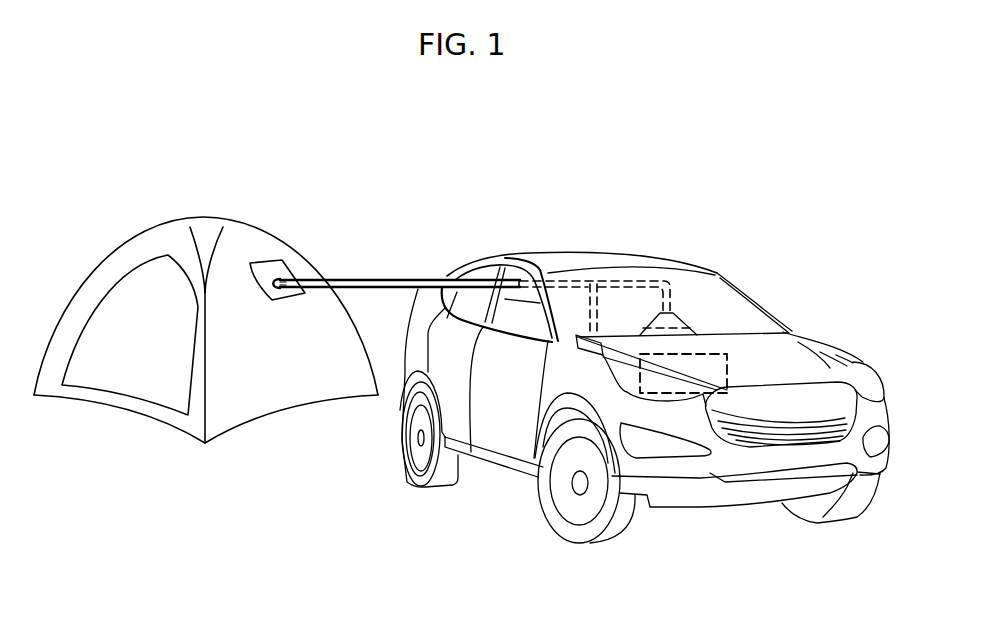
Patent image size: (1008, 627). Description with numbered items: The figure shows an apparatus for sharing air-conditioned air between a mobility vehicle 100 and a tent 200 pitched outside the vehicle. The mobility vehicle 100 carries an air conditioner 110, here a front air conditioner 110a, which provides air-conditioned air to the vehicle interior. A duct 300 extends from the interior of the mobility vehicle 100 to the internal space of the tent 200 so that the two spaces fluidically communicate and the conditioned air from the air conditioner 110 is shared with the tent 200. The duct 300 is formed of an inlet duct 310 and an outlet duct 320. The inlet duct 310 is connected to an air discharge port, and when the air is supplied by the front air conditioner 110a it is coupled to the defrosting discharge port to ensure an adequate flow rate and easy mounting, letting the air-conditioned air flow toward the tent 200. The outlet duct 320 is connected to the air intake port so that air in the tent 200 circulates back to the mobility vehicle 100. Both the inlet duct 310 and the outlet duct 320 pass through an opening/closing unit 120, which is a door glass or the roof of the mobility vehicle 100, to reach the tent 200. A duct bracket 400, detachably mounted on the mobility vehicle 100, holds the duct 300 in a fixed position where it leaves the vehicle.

The mobility vehicle 100 is at (644, 370).
The air conditioner 110 is at (665, 393).
The front air conditioner 110a is at (696, 473).
The opening/closing unit 120 is at (527, 320).
The tent 200 is at (193, 209).
The duct 300 is at (396, 222).
The inlet duct 310 is at (422, 285).
The outlet duct 320 is at (328, 277).
The duct bracket 400 is at (517, 277).